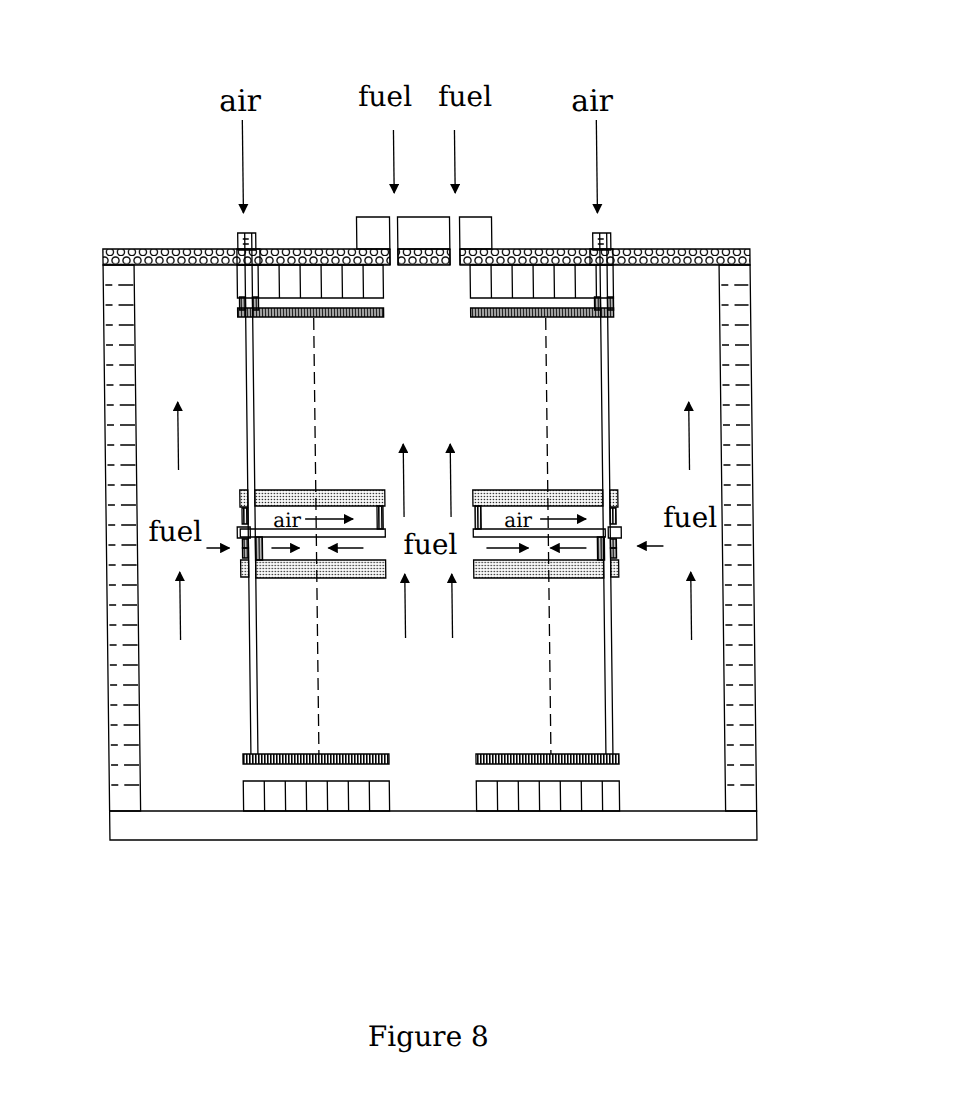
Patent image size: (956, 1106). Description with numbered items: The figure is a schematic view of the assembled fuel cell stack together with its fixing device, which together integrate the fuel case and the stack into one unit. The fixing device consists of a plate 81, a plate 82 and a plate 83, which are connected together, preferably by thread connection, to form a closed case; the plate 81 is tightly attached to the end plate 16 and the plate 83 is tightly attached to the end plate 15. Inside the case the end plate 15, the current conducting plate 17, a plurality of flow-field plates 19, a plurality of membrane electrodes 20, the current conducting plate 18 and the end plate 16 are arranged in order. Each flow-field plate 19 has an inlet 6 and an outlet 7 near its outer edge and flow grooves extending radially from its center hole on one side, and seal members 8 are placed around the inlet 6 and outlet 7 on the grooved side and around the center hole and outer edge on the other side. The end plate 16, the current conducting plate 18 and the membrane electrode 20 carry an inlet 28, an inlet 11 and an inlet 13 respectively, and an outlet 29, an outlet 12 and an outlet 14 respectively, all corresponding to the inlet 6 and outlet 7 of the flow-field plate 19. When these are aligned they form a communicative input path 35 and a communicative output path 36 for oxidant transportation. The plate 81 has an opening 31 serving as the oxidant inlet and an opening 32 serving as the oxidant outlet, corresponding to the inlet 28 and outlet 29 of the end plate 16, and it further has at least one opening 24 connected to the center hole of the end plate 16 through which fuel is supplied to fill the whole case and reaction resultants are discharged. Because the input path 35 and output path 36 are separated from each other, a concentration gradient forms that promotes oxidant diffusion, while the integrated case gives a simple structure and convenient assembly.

The inlet 6 is at (245, 486).
The outlet 7 is at (609, 497).
The seal member 8 is at (236, 512).
The inlet of current conducting plate 11 is at (165, 250).
The outlet of current conducting plate 12 is at (611, 310).
The inlet of membrane electrode 13 is at (233, 531).
The outlet of membrane electrode 14 is at (611, 538).
The end plate 15 is at (264, 800).
The end plate 16 is at (525, 278).
The current conducting plate 17 is at (354, 765).
The current conducting plate 18 is at (298, 310).
The flow-field plate 19 is at (232, 491).
The membrane electrode 20 is at (236, 524).
The opening 24 is at (455, 262).
The inlet of end plate 28 is at (237, 265).
The outlet of end plate 29 is at (613, 258).
The opening 31 is at (250, 253).
The opening 32 is at (603, 237).
The input path 35 is at (250, 705).
The output path 36 is at (600, 680).
The plate 81 is at (682, 250).
The plate 82 is at (126, 782).
The plate 83 is at (591, 825).